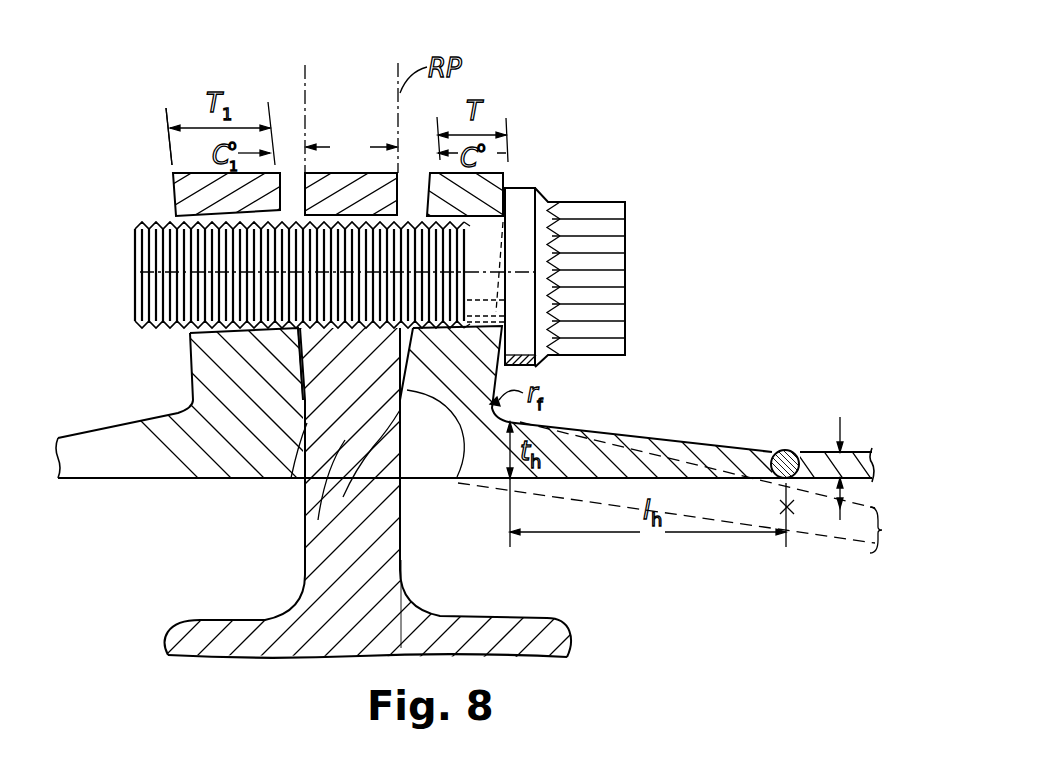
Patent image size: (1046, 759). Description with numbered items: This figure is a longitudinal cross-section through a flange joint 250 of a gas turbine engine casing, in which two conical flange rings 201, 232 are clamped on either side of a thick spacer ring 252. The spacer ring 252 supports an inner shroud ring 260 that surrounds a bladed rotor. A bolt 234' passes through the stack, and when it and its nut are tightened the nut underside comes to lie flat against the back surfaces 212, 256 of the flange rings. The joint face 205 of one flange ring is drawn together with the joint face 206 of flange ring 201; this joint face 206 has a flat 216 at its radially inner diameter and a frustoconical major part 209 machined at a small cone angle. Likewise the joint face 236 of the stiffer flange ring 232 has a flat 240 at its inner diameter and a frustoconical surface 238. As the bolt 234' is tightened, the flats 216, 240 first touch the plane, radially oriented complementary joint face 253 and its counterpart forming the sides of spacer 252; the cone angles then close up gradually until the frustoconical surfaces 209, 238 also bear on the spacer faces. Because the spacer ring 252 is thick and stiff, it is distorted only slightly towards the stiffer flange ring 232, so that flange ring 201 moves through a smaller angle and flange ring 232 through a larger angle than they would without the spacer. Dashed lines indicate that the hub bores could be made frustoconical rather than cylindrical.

The flange ring 201 is at (473, 183).
The joint face 205 is at (135, 276).
The joint face 206 is at (462, 333).
The major part of joint face 209 is at (433, 478).
The back face 212 is at (522, 364).
The flat 216 is at (423, 480).
The flange ring 232 is at (190, 190).
The bolt 234' is at (621, 277).
The joint face 236 is at (293, 373).
The frustoconical surface 238 is at (253, 480).
The flat 240 is at (293, 476).
The flange joint 250 is at (160, 134).
The spacer ring 252 is at (330, 180).
The complementary joint face 253 is at (307, 527).
The back surface 256 is at (190, 352).
The inner shroud ring 260 is at (545, 618).